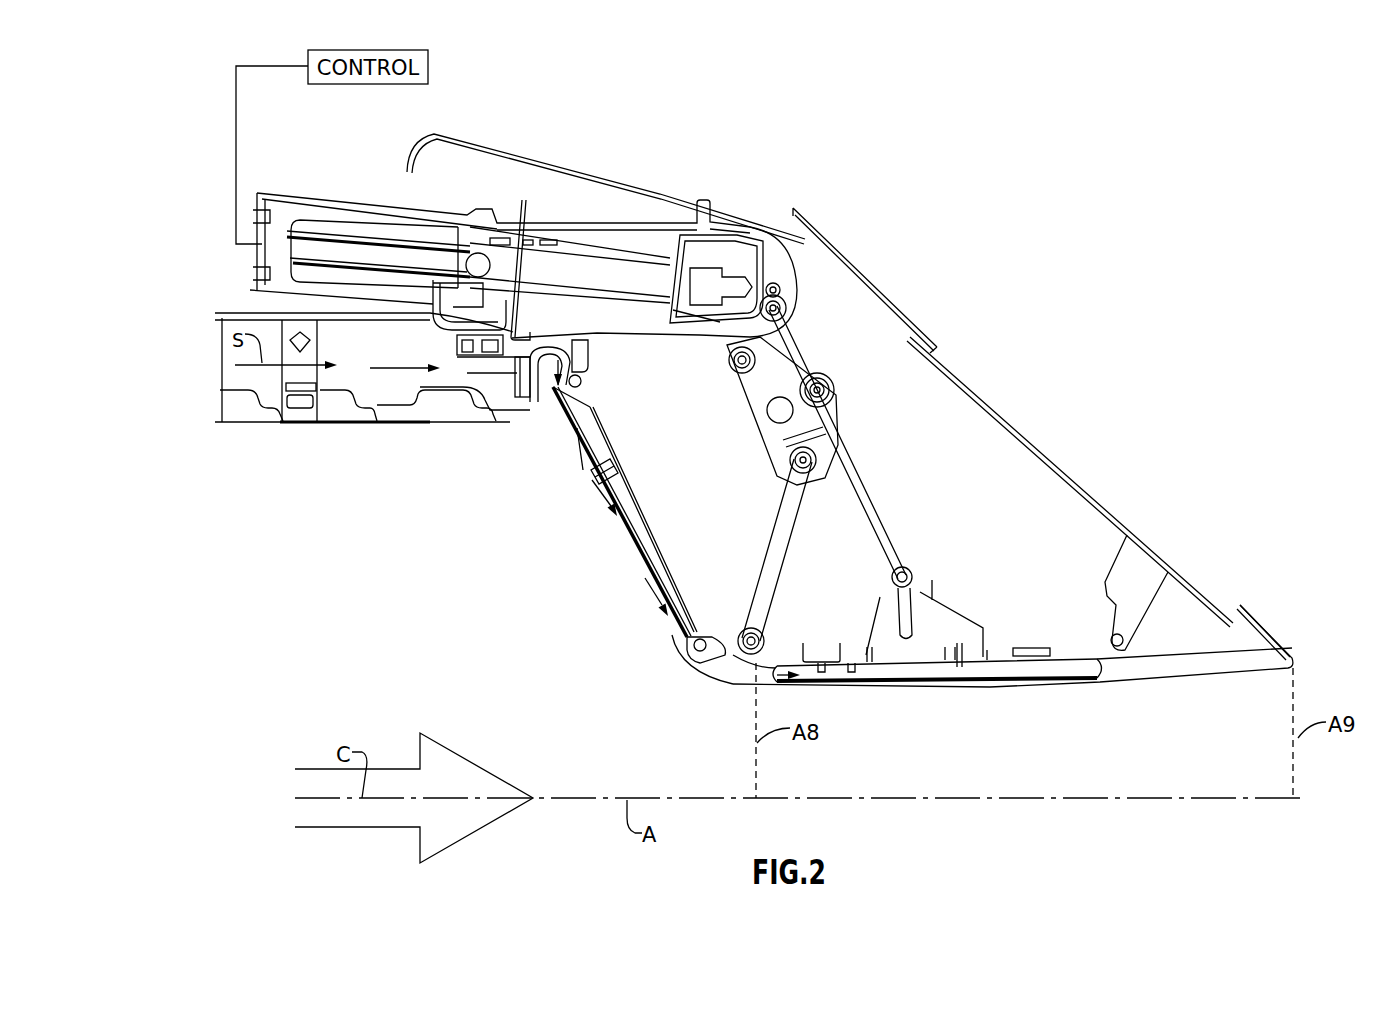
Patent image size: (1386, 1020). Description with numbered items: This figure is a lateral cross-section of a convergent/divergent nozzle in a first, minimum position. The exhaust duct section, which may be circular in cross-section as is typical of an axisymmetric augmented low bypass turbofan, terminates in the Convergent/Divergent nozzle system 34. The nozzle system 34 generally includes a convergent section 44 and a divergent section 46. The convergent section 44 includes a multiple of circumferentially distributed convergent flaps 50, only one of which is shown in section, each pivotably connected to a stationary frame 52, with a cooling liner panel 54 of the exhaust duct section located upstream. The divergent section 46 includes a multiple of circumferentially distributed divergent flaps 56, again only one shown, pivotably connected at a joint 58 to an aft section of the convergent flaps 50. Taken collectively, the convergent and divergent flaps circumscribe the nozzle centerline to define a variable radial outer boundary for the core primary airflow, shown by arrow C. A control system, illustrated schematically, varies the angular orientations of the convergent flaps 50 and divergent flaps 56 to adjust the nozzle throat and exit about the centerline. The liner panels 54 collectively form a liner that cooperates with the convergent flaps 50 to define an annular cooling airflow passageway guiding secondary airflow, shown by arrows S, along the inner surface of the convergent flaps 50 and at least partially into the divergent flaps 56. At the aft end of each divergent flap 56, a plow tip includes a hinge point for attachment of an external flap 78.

The Convergent/Divergent (C/D) nozzle system 34 is at (1110, 246).
The convergent section 44 is at (448, 603).
The divergent section 46 is at (1022, 761).
The convergent flap 50 is at (636, 571).
The stationary frame 52 is at (640, 338).
The cooling liner panel 54 is at (424, 438).
The divergent flap 56 is at (1060, 690).
The joint 58 is at (713, 695).
The external flap 78 is at (1103, 503).